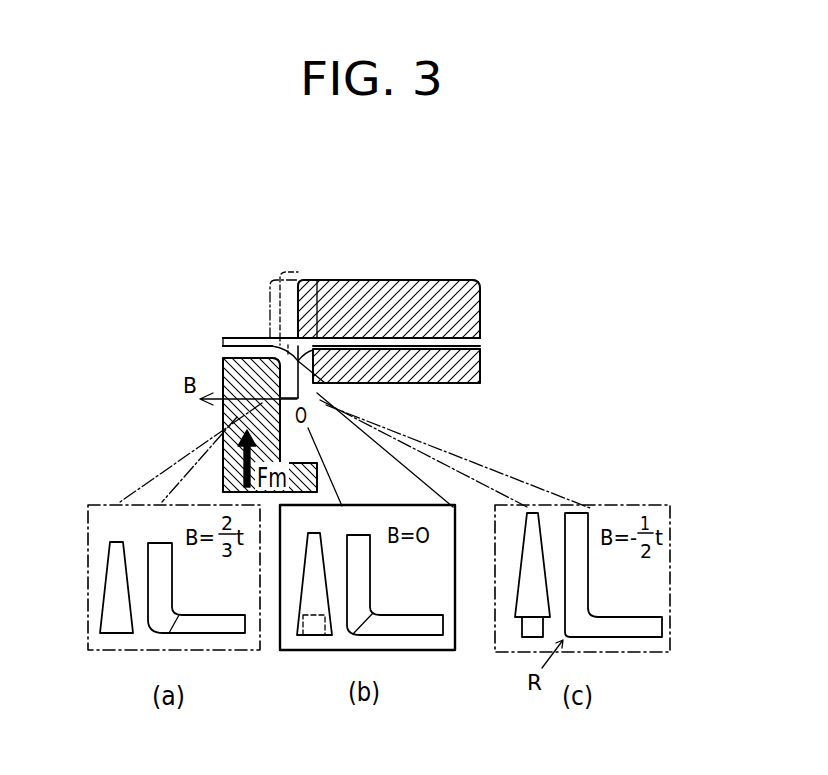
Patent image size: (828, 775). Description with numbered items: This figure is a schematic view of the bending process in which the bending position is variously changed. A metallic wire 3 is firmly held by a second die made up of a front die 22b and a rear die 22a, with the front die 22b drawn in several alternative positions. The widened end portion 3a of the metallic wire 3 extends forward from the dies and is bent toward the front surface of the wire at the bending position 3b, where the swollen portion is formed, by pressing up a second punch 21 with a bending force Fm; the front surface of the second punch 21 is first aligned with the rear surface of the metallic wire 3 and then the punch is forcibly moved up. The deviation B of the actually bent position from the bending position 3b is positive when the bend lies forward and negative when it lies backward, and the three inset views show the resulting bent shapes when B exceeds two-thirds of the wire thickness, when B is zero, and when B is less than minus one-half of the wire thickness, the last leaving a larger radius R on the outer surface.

The metallic wire 3 is at (480, 344).
The widened end portion 3a is at (238, 338).
The bending position 3b is at (317, 393).
The second punch 21 is at (228, 377).
The rear die 22a is at (470, 375).
The front die 22b is at (269, 281).